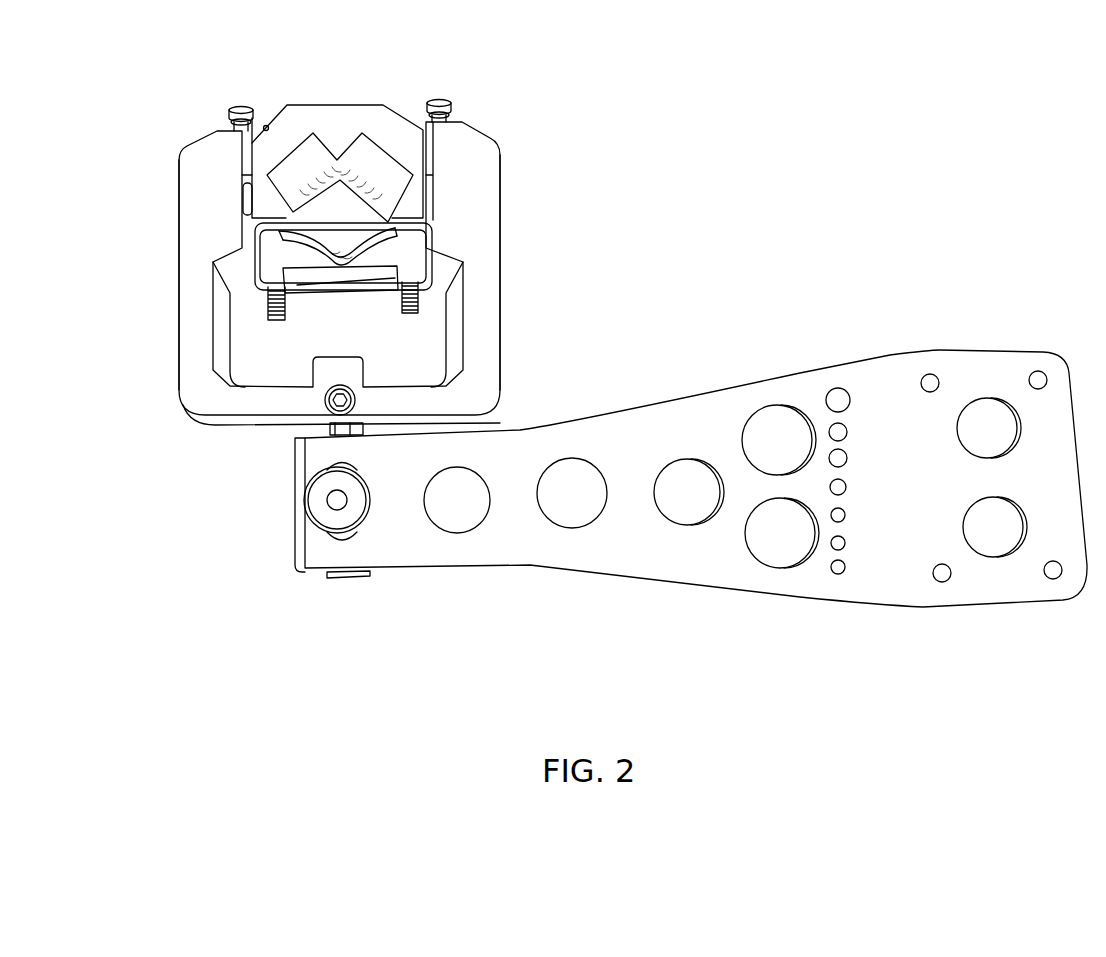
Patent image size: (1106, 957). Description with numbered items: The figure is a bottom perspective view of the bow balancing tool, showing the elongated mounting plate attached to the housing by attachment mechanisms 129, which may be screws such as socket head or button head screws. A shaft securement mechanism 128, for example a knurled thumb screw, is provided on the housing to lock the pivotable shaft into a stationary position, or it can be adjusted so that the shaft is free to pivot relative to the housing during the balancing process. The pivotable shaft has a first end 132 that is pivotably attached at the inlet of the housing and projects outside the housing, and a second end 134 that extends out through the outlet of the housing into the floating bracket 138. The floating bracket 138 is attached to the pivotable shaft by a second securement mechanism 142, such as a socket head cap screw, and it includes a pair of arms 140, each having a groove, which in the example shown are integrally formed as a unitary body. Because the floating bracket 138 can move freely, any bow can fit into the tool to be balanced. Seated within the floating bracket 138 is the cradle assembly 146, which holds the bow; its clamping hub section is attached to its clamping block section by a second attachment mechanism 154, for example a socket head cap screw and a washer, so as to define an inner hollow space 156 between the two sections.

The shaft securement mechanism 128 is at (320, 520).
The attachment mechanisms 129 is at (348, 462).
The first end 132 is at (348, 578).
The second end 134 is at (322, 432).
The floating bracket 138 is at (180, 302).
The arms 140 is at (187, 193).
The second securement mechanism 142 is at (327, 397).
The cradle assembly 146 is at (337, 102).
The second attachment mechanism 154 is at (265, 127).
The inner hollow space 156 is at (355, 220).